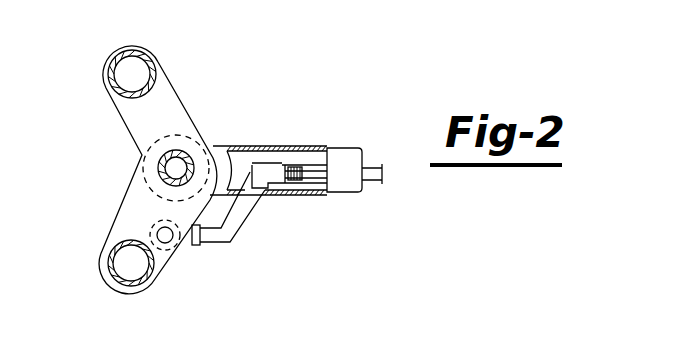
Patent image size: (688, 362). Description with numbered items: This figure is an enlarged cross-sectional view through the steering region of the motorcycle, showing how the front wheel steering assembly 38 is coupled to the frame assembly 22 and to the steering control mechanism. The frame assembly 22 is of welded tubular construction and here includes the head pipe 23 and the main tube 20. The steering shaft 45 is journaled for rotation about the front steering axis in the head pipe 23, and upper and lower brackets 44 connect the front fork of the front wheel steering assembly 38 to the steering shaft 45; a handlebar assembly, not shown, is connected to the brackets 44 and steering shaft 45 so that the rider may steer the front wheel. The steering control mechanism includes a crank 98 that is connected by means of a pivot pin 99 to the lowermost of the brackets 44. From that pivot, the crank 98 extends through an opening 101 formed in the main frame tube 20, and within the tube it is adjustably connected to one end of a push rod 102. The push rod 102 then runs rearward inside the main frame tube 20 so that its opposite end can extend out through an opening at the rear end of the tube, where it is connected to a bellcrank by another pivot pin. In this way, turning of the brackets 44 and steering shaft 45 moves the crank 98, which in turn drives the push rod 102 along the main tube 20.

The main tube 20 is at (353, 163).
The frame assembly 22 is at (342, 141).
The head pipe 23 is at (140, 178).
The front wheel steering assembly 38 is at (120, 291).
The brackets 44 is at (135, 120).
The steering shaft 45 is at (186, 157).
The crank 98 is at (242, 214).
The pivot pin 99 is at (166, 243).
The opening 101 is at (282, 195).
The push rod 102 is at (367, 182).